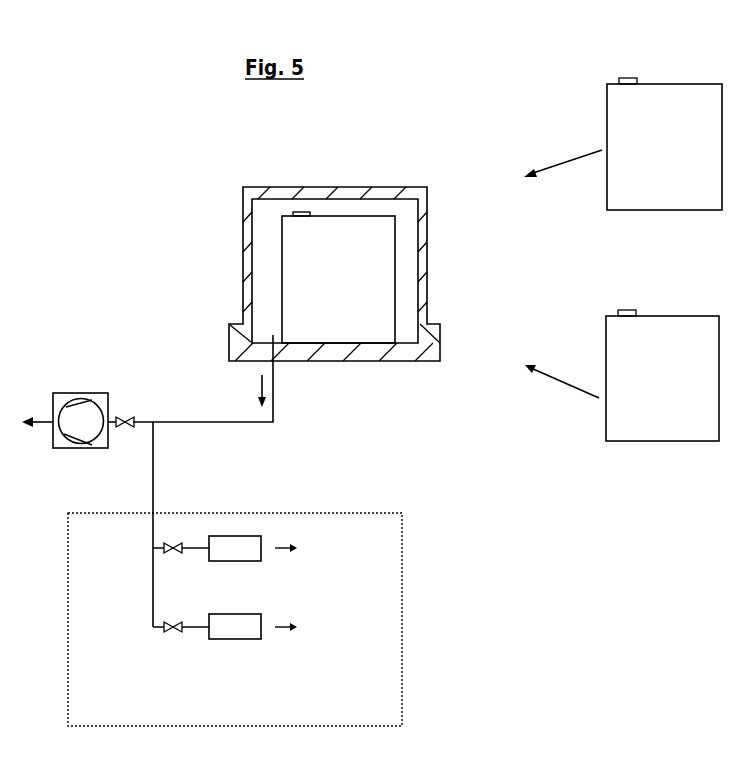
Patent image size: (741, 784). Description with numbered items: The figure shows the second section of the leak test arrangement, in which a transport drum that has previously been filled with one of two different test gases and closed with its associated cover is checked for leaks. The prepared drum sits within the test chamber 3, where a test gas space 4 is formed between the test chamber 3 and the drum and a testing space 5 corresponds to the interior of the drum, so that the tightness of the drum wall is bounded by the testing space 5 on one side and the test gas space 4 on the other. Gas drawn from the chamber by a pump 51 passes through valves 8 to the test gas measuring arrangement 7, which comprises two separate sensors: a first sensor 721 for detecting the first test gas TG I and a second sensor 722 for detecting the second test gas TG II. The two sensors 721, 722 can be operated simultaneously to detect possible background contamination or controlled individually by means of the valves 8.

The test chamber 3 is at (234, 205).
The test gas space 4 is at (353, 267).
The testing space 5 is at (408, 335).
The test gas measuring arrangement 7 is at (406, 653).
The valve 8 is at (123, 414).
The pump 51 is at (83, 393).
The first sensor 721 is at (236, 543).
The second sensor 722 is at (228, 633).